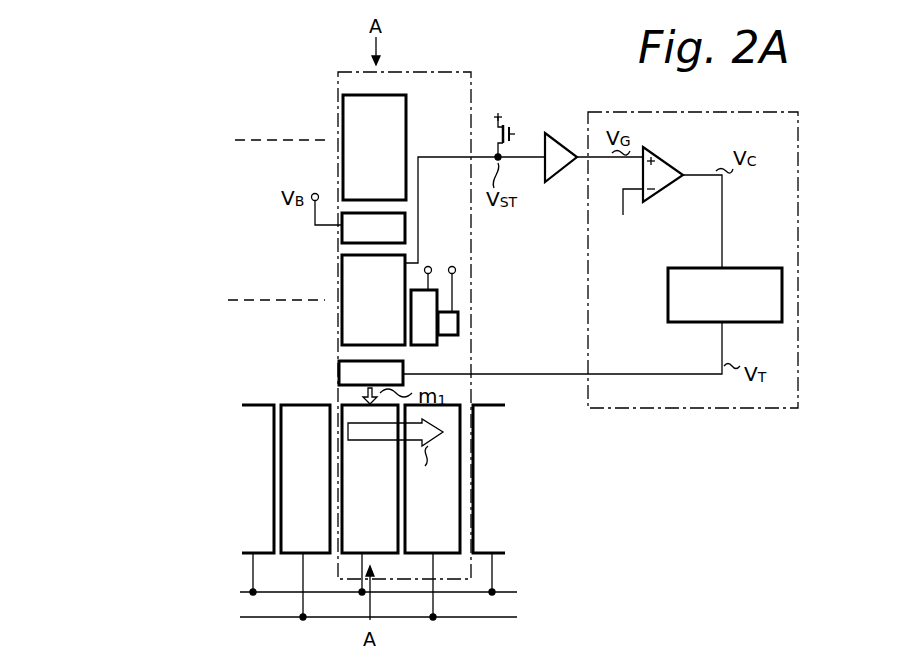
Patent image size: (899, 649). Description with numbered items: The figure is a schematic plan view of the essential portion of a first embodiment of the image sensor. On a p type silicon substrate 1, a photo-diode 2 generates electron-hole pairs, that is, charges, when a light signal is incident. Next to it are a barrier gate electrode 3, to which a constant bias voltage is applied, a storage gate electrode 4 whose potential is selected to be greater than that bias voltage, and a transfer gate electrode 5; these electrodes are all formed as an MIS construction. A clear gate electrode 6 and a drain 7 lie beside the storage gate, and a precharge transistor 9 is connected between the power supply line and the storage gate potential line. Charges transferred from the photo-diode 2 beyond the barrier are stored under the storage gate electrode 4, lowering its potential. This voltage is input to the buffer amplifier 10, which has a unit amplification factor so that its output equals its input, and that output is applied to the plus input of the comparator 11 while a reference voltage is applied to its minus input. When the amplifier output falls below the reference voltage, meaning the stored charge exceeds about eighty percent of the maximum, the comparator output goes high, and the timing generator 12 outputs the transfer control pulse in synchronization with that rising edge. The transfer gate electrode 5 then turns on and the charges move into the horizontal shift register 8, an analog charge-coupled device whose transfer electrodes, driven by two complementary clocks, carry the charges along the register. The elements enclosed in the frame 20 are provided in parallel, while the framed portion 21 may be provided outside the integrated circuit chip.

The p type silicon substrate 1 is at (478, 272).
The photo-diode 2 is at (406, 130).
The barrier gate electrode 3 is at (342, 238).
The storage gate electrode 4 is at (342, 278).
The transfer gate electrode 5 is at (339, 374).
The clear gate electrode 6 is at (430, 347).
The drain 7 is at (459, 324).
The horizontal shift register 8 is at (262, 450).
The precharge transistor 9 is at (498, 133).
The buffer amplifier 10 is at (568, 135).
The comparator 11 is at (696, 151).
The timing generator 12 is at (750, 268).
The plurality elements 20 is at (468, 74).
The portion 21 is at (800, 168).